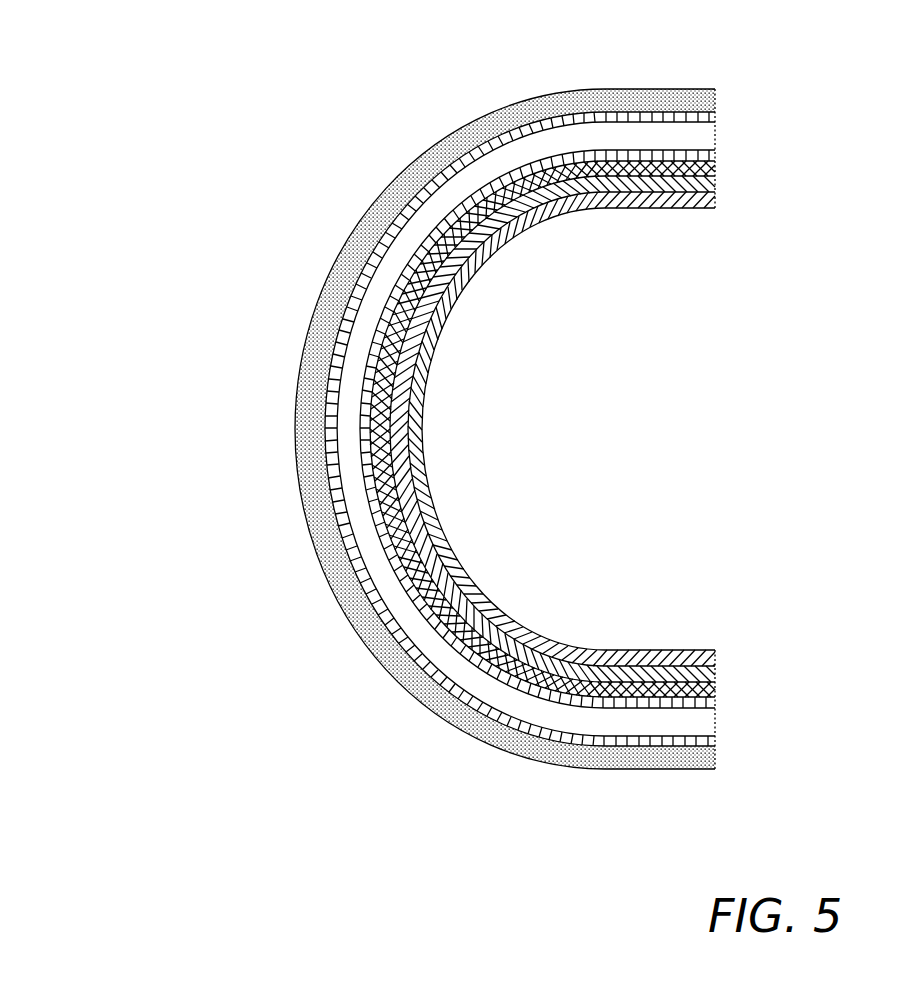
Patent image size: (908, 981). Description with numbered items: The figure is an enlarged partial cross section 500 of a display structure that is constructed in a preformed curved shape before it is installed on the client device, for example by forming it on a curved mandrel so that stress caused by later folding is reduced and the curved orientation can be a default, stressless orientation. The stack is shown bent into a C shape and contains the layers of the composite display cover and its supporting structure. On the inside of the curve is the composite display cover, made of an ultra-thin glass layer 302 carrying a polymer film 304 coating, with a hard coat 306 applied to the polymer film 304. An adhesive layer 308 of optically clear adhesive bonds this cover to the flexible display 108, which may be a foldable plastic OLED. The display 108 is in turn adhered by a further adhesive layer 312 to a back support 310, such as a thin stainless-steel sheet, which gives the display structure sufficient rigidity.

The enlarged partial cross section 500 is at (156, 104).
The back support 310 is at (697, 100).
The adhesive layer 312 is at (716, 118).
The display 108 is at (707, 132).
The adhesive layer 308 is at (716, 157).
The glass layer 302 is at (713, 172).
The polymer film 304 is at (713, 188).
The hard coat 306 is at (713, 197).